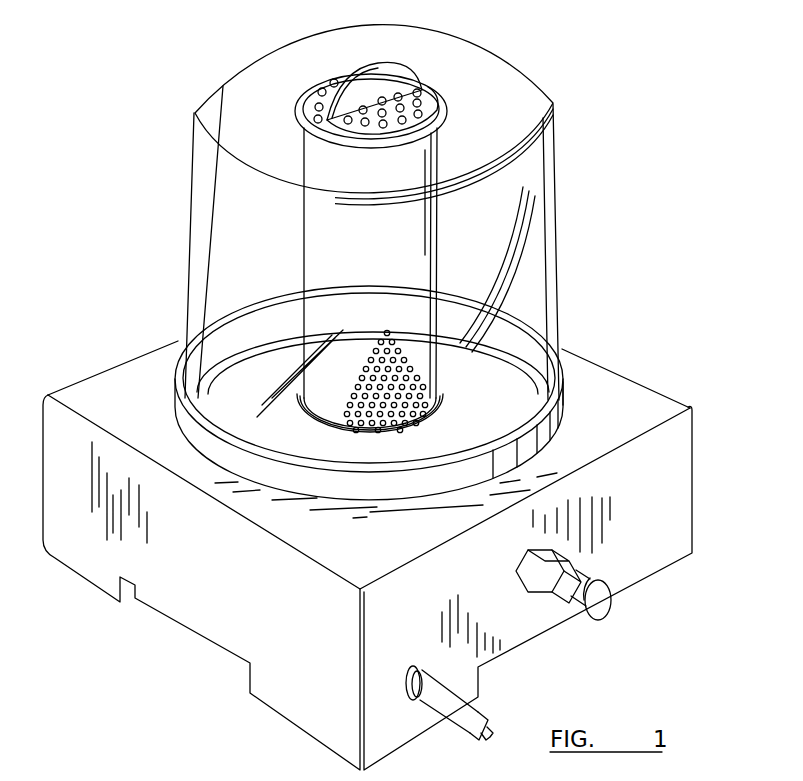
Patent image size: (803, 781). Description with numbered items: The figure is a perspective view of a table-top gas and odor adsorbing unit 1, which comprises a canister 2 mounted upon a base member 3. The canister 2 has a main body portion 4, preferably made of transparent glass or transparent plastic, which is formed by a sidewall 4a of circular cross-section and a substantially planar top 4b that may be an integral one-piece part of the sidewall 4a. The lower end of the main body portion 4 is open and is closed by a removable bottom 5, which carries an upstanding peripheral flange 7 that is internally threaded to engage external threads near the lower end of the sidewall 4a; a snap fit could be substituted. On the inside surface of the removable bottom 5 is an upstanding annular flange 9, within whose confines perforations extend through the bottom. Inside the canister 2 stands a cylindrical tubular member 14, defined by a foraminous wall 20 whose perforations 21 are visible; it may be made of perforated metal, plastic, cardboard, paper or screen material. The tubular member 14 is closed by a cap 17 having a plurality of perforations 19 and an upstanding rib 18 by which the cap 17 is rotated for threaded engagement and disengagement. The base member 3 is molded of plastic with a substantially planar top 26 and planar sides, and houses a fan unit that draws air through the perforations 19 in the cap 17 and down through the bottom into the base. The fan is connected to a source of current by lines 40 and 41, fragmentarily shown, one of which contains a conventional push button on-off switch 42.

The gas and odor adsorbing unit 1 is at (568, 211).
The canister 2 is at (553, 164).
The base member 3 is at (693, 463).
The main body portion 4 is at (553, 240).
The sidewall 4a is at (553, 275).
The top 4b is at (523, 103).
The removable bottom 5 is at (537, 442).
The upstanding peripheral flange 7 is at (563, 405).
The annular flange 9 is at (435, 420).
The tubular member 14 is at (428, 222).
The cap 17 is at (433, 100).
The upstanding rib 18 is at (410, 73).
The perforations 19 is at (323, 87).
The foraminous wall 20 is at (397, 286).
The perforations 21 is at (367, 348).
The top 26 is at (635, 398).
The line 40 is at (462, 722).
The line 41 is at (478, 708).
The switch 42 is at (607, 610).